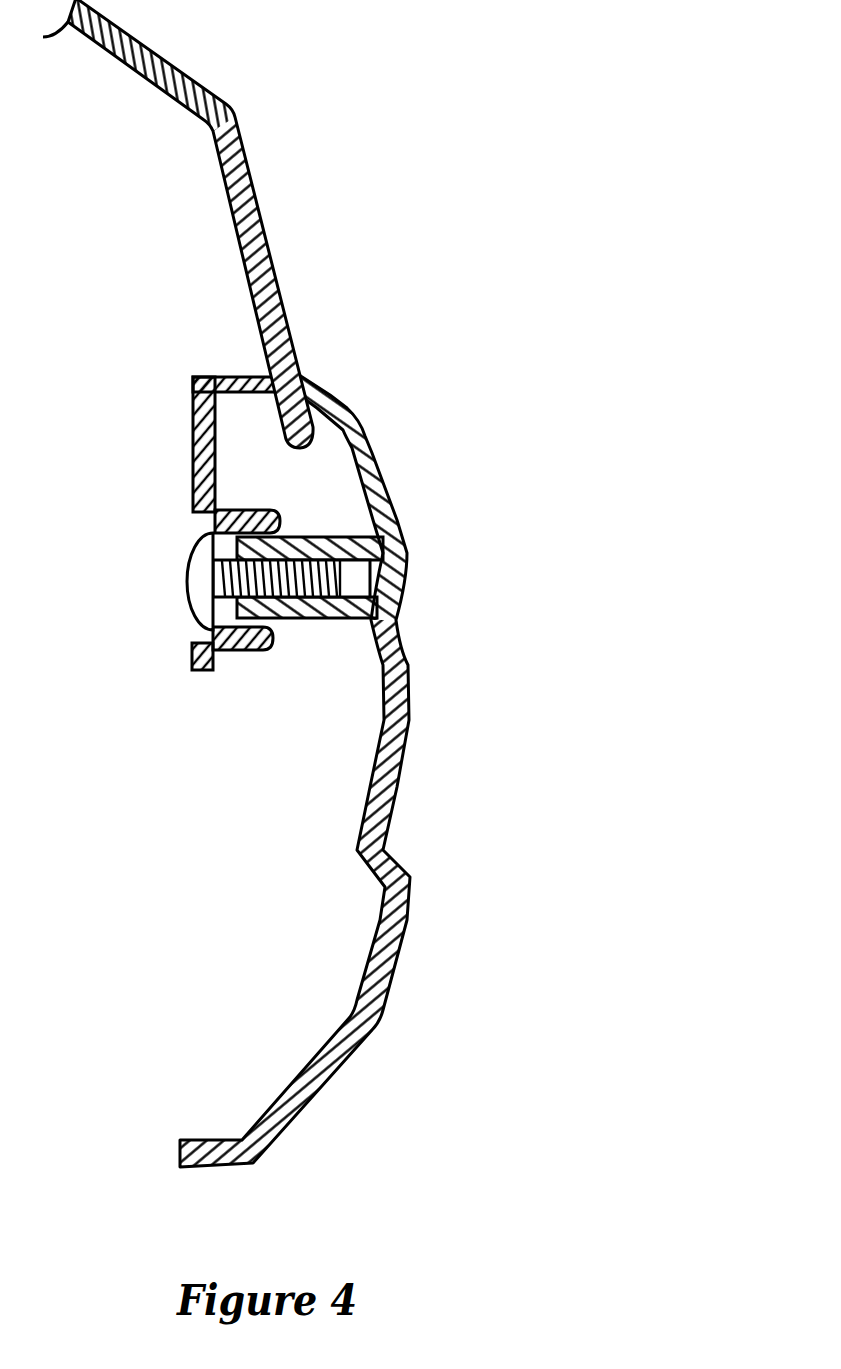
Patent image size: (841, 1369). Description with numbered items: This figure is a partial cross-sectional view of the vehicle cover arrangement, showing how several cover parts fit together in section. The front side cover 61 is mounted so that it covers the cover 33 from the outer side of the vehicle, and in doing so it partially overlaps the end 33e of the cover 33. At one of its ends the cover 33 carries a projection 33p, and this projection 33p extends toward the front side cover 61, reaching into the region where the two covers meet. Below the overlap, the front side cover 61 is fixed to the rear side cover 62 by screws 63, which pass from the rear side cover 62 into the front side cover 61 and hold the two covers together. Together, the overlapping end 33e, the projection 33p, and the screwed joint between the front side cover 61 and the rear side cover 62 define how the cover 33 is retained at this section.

The cover 33 is at (240, 125).
The end of the cover 33e is at (197, 383).
The projection 33p is at (340, 408).
The front side cover 61 is at (352, 761).
The rear side cover 62 is at (193, 447).
The screws 63 is at (190, 583).